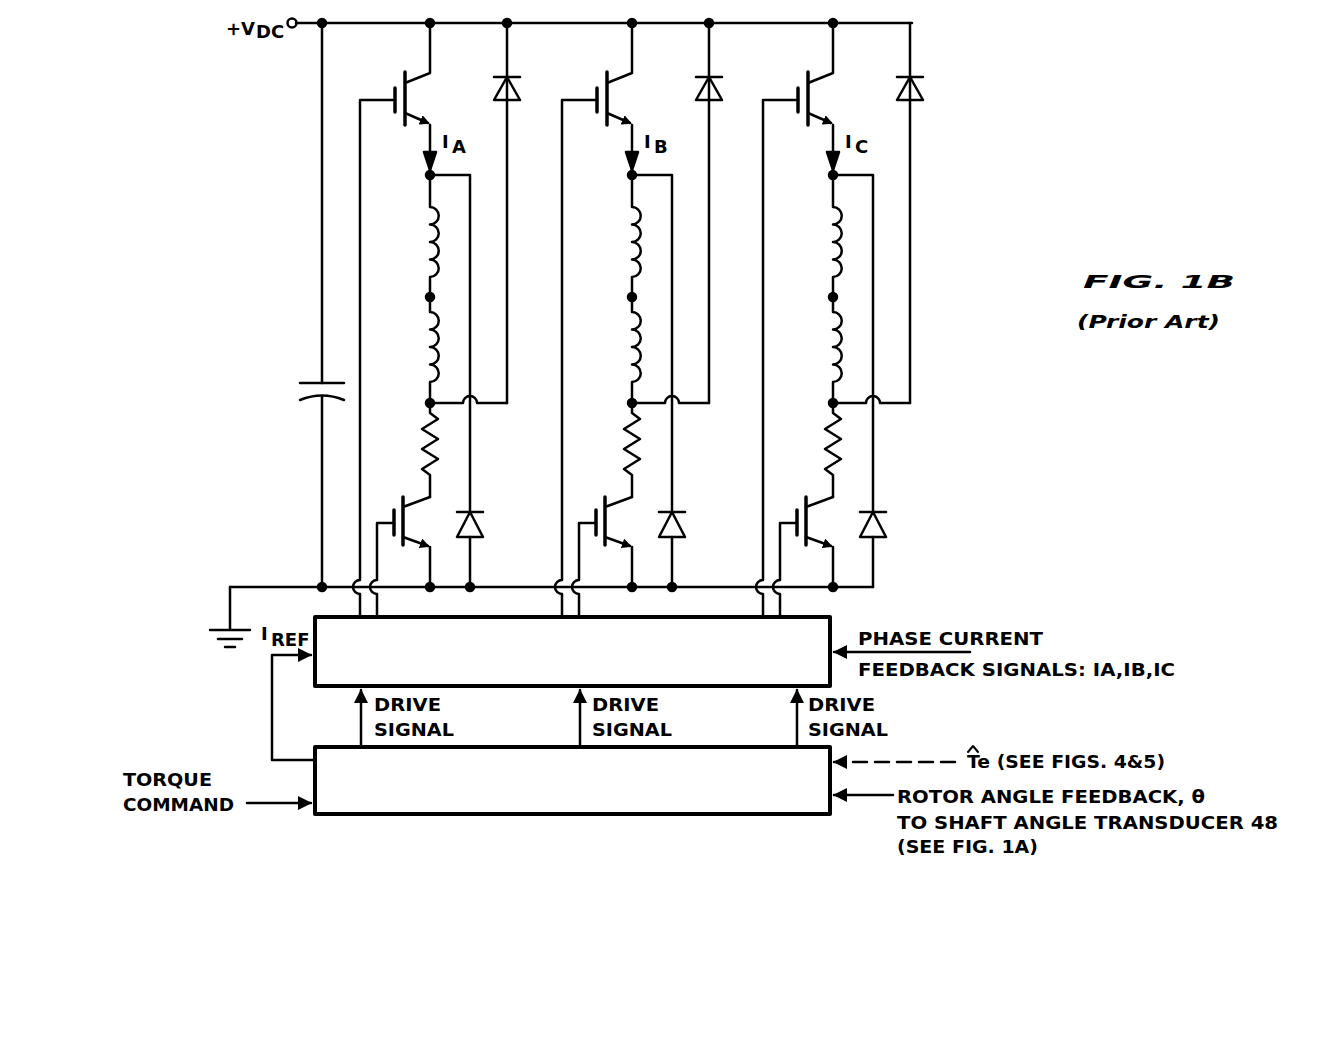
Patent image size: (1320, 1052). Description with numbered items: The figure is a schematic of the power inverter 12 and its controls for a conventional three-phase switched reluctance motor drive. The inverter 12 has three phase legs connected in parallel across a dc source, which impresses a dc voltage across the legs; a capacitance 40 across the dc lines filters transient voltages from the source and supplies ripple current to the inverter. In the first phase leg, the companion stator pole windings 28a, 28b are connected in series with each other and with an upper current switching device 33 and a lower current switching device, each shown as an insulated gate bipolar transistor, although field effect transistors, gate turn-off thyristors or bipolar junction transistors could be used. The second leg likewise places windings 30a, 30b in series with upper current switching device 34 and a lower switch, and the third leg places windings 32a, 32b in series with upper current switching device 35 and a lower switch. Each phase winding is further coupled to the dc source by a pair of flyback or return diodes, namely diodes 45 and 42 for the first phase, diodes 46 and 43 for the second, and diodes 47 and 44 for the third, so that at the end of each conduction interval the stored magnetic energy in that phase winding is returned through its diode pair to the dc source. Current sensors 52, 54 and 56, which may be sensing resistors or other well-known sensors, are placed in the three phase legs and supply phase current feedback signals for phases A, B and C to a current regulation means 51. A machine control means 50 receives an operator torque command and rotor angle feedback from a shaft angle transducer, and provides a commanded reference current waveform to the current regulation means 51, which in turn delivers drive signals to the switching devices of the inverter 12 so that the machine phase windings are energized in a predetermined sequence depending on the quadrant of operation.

The power inverter 12 is at (1014, 128).
The upper current switching device 33 is at (419, 73).
The upper current switching device 34 is at (596, 320).
The upper current switching device 35 is at (797, 320).
The flyback diode 42 is at (516, 100).
The flyback diode 43 is at (726, 213).
The flyback diode 44 is at (927, 213).
The stator pole winding 28a is at (432, 250).
The stator pole winding 28b is at (427, 360).
The stator pole winding 30a is at (613, 236).
The stator pole winding 30b is at (612, 350).
The stator pole winding 32a is at (814, 236).
The stator pole winding 32b is at (813, 350).
The current sensor 52 is at (426, 445).
The current sensor 54 is at (614, 450).
The current sensor 56 is at (815, 450).
The flyback diode 45 is at (478, 538).
The flyback diode 46 is at (693, 541).
The flyback diode 47 is at (894, 541).
The capacitance 40 is at (310, 382).
The machine control means 50 is at (800, 815).
The current regulation means 51 is at (806, 617).